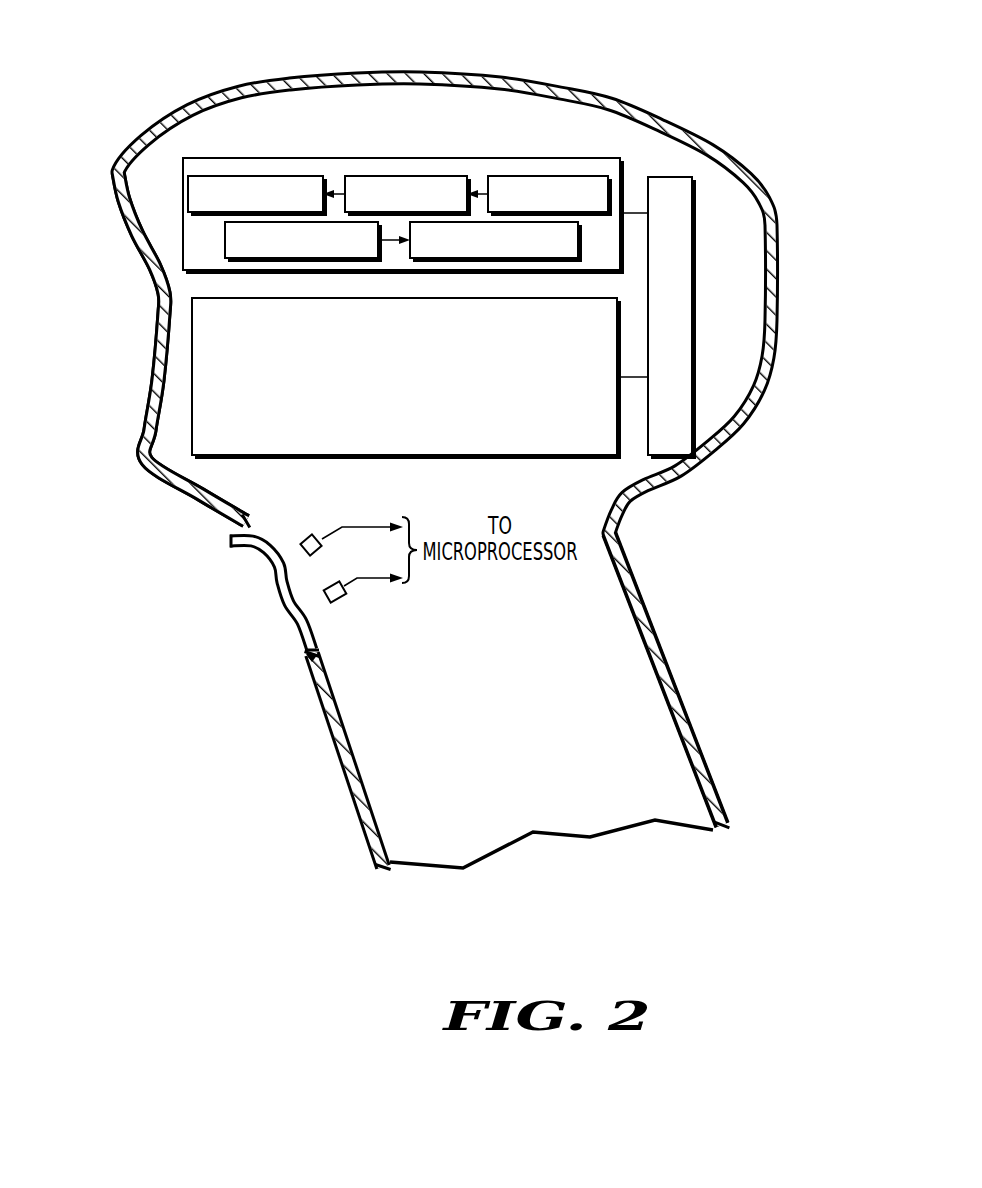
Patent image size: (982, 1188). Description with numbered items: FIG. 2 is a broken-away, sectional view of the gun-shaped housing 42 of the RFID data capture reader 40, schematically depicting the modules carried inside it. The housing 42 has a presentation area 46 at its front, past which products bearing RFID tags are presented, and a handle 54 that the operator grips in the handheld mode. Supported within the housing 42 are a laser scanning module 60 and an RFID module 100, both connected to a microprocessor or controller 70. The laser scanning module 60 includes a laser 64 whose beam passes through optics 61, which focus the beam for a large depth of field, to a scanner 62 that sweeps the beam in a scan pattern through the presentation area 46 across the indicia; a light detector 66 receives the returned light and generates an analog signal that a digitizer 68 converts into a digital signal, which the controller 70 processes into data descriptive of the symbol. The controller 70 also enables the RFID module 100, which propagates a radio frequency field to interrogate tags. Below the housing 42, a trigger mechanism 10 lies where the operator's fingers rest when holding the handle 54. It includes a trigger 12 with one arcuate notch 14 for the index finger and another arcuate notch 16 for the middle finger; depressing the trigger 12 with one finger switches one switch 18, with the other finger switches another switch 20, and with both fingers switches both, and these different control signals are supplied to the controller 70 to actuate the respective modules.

The trigger mechanism 10 is at (258, 616).
The trigger 12 is at (304, 658).
The arcuate notch 14 is at (274, 571).
The arcuate notch 16 is at (294, 622).
The switch 18 is at (304, 533).
The switch 20 is at (341, 599).
The RFID data capture reader 40 is at (485, 474).
The gun-shaped housing 42 is at (779, 292).
The presentation area 46 is at (155, 300).
The handle 54 is at (677, 634).
The laser scanning module 60 is at (333, 152).
The optics 61 is at (406, 175).
The scanner 62 is at (255, 175).
The laser 64 is at (545, 175).
The light detector 66 is at (225, 241).
The digitizer 68 is at (582, 241).
The controller 70 is at (695, 320).
The RFID module 100 is at (191, 375).